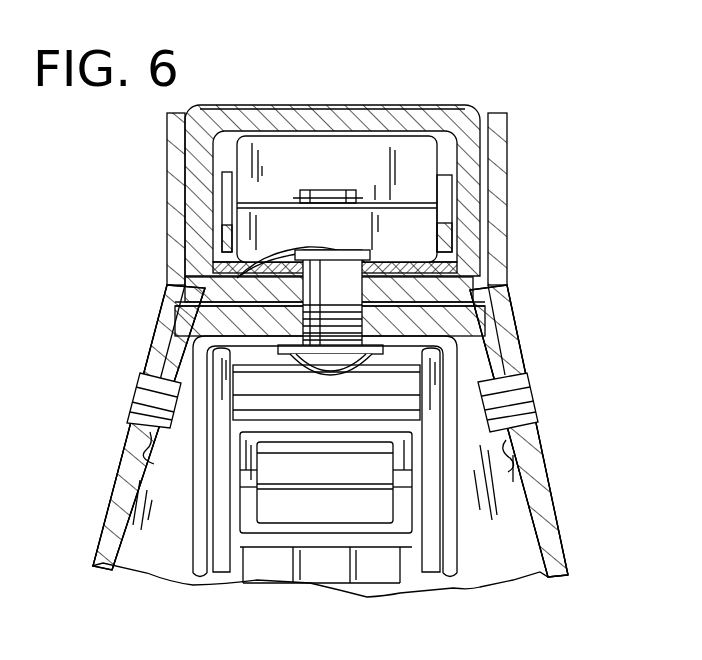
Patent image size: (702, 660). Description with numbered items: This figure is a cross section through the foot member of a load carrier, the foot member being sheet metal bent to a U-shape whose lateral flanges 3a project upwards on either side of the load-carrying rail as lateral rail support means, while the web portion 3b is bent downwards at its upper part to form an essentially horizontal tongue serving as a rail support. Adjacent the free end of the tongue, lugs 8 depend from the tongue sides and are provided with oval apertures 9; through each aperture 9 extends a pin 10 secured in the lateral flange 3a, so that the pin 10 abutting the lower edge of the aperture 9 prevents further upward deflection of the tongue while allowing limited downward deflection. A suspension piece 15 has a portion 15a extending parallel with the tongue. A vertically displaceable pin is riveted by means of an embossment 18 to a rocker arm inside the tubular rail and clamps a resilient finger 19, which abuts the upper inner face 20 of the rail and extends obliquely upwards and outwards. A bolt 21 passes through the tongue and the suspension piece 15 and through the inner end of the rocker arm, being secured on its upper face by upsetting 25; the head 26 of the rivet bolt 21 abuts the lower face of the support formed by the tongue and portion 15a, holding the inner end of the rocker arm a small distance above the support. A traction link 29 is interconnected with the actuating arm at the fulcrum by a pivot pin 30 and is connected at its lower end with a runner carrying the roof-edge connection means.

The lateral flanges 3a is at (125, 458).
The web portion 3b is at (530, 468).
The lugs 8 is at (162, 430).
The oval apertures 9 is at (168, 342).
The pin 10 is at (155, 391).
The suspension piece 15 is at (452, 552).
The portion of the suspension piece 15a is at (498, 291).
The embossment 18 is at (302, 150).
The resilient finger 19 is at (338, 181).
The upper inner face 20 is at (417, 107).
The bolt 21 is at (308, 310).
The upsetting 25 is at (310, 240).
The head 26 is at (275, 348).
The traction link 29 is at (317, 572).
The pivot pin 30 is at (337, 473).